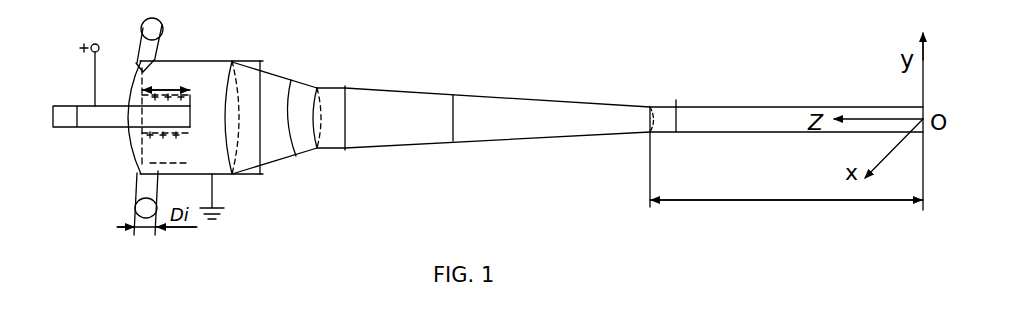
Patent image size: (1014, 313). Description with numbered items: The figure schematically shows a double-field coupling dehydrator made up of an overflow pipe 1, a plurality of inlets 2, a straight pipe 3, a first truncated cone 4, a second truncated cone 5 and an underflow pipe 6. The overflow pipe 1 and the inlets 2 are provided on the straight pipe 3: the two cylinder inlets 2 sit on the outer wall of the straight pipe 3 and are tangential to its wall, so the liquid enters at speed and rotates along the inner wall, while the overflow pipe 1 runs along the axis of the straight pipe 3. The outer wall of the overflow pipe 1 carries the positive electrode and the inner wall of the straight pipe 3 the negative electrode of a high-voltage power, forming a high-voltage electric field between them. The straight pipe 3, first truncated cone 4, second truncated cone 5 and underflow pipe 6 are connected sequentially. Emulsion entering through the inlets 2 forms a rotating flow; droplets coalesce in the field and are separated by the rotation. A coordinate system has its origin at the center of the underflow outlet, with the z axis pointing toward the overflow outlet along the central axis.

The overflow pipe 1 is at (97, 118).
The inlets 2 is at (158, 33).
The straight pipe 3 is at (200, 65).
The first truncated cone 4 is at (272, 85).
The second truncated cone 5 is at (395, 97).
The underflow pipe 6 is at (748, 110).